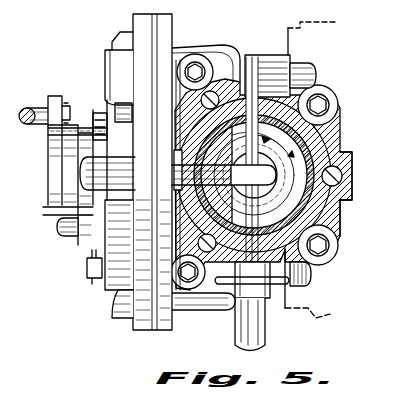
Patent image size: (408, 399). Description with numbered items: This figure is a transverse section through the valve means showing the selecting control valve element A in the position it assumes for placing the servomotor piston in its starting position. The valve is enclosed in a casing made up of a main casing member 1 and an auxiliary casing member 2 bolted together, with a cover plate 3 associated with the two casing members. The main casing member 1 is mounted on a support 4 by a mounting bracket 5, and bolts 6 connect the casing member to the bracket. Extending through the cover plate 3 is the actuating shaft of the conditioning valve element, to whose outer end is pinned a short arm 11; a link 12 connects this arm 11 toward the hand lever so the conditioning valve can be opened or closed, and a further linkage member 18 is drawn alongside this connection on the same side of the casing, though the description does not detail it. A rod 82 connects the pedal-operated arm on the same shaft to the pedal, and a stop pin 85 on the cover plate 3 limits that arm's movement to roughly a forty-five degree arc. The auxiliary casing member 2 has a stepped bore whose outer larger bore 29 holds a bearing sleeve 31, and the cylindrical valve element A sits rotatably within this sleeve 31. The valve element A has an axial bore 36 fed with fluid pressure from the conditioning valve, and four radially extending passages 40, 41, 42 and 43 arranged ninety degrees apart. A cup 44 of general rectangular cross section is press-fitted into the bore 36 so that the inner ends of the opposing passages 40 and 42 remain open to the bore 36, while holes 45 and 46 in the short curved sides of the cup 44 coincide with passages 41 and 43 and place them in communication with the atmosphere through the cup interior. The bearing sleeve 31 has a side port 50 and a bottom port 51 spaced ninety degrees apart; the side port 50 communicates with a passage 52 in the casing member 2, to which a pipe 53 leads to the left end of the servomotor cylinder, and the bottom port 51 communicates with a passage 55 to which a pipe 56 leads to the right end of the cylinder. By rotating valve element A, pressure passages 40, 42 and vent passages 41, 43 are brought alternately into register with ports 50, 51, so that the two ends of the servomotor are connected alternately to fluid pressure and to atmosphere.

The main casing member 1 is at (196, 46).
The auxiliary casing member 2 is at (318, 94).
The cover plate 3 is at (136, 22).
The support 4 is at (312, 22).
The mounting bracket 5 is at (288, 55).
The bolts 6 is at (302, 70).
The short arm 11 is at (58, 96).
The link 12 is at (24, 108).
The rod 18 is at (48, 131).
The outer larger bore 29 is at (323, 130).
The bearing sleeve 31 is at (313, 152).
The axial bore 36 is at (305, 205).
The radially extending passage 40 is at (256, 60).
The radially extending passage 41 is at (176, 205).
The radially extending passage 42 is at (332, 244).
The radially extending passage 43 is at (342, 156).
The cup 44 is at (300, 190).
The hole 45 is at (346, 180).
The hole 46 is at (253, 175).
The side port 50 is at (178, 138).
The bottom port 51 is at (322, 258).
The passage 52 is at (176, 158).
The pipe 53 is at (80, 173).
The passage 55 is at (312, 264).
The pipe 56 is at (264, 338).
The rod 82 is at (57, 227).
The stop pin 85 is at (43, 210).
The selecting control valve element A is at (336, 118).